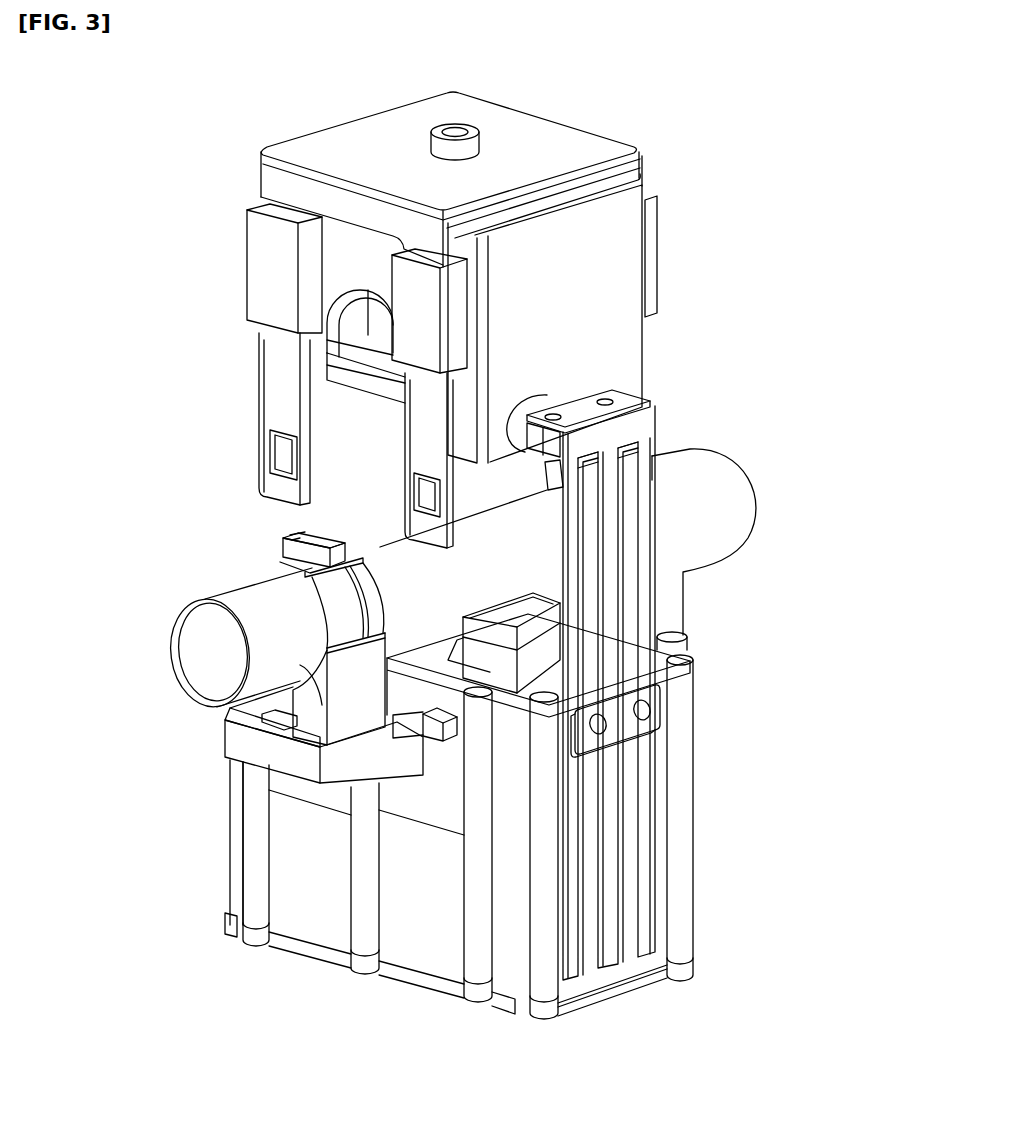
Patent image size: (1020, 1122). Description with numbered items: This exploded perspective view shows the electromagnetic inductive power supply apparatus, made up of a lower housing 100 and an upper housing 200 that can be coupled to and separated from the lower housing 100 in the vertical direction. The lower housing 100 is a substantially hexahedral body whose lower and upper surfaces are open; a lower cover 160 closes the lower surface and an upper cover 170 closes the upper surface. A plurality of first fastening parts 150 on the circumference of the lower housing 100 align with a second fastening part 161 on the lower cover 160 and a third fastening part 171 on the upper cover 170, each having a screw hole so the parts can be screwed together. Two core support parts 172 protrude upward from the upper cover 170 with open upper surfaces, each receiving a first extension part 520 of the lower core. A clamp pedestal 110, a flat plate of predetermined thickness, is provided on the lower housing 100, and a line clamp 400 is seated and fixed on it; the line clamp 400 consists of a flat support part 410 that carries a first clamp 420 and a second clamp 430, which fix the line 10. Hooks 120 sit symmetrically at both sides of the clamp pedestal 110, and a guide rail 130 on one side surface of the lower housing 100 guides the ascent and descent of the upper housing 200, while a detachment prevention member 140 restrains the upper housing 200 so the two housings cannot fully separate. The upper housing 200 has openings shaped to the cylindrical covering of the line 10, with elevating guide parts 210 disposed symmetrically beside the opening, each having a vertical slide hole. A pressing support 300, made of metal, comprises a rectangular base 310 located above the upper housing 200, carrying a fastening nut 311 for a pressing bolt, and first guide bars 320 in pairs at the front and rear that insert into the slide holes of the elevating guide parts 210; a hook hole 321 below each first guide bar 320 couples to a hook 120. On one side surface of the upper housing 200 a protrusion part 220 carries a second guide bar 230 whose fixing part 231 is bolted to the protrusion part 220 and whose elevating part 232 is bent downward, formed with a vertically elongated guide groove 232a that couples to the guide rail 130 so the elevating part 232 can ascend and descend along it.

The pressing support 300 is at (245, 178).
The base 310 is at (368, 130).
The fastening nut 311 is at (436, 126).
The first guide bar 320 is at (275, 362).
The hook hole 321 is at (283, 452).
The elevating guide part 210 is at (452, 290).
The upper housing 200 is at (585, 297).
The protrusion part 220 is at (545, 402).
The second guide bar 230 is at (810, 417).
The fixing part 231 is at (623, 403).
The elevating part 232 is at (633, 433).
The guide slot 232a is at (587, 537).
The line 10 is at (718, 535).
The first extension part 520 is at (530, 607).
The line clamp 400 is at (66, 603).
The support part 410 is at (228, 712).
The first clamp 420 is at (300, 582).
The second clamp 430 is at (312, 600).
The lower housing 100 is at (293, 857).
The clamp pedestal 110 is at (247, 743).
The hook 120 is at (428, 733).
The guide rail 130 is at (647, 898).
The detachment prevention member 140 is at (643, 738).
The first fastening part 150 is at (367, 913).
The lower cover 160 is at (427, 987).
The second fastening part 161 is at (477, 1007).
The upper cover 170 is at (553, 685).
The third fastening part 171 is at (683, 668).
The core support part 172 is at (537, 643).